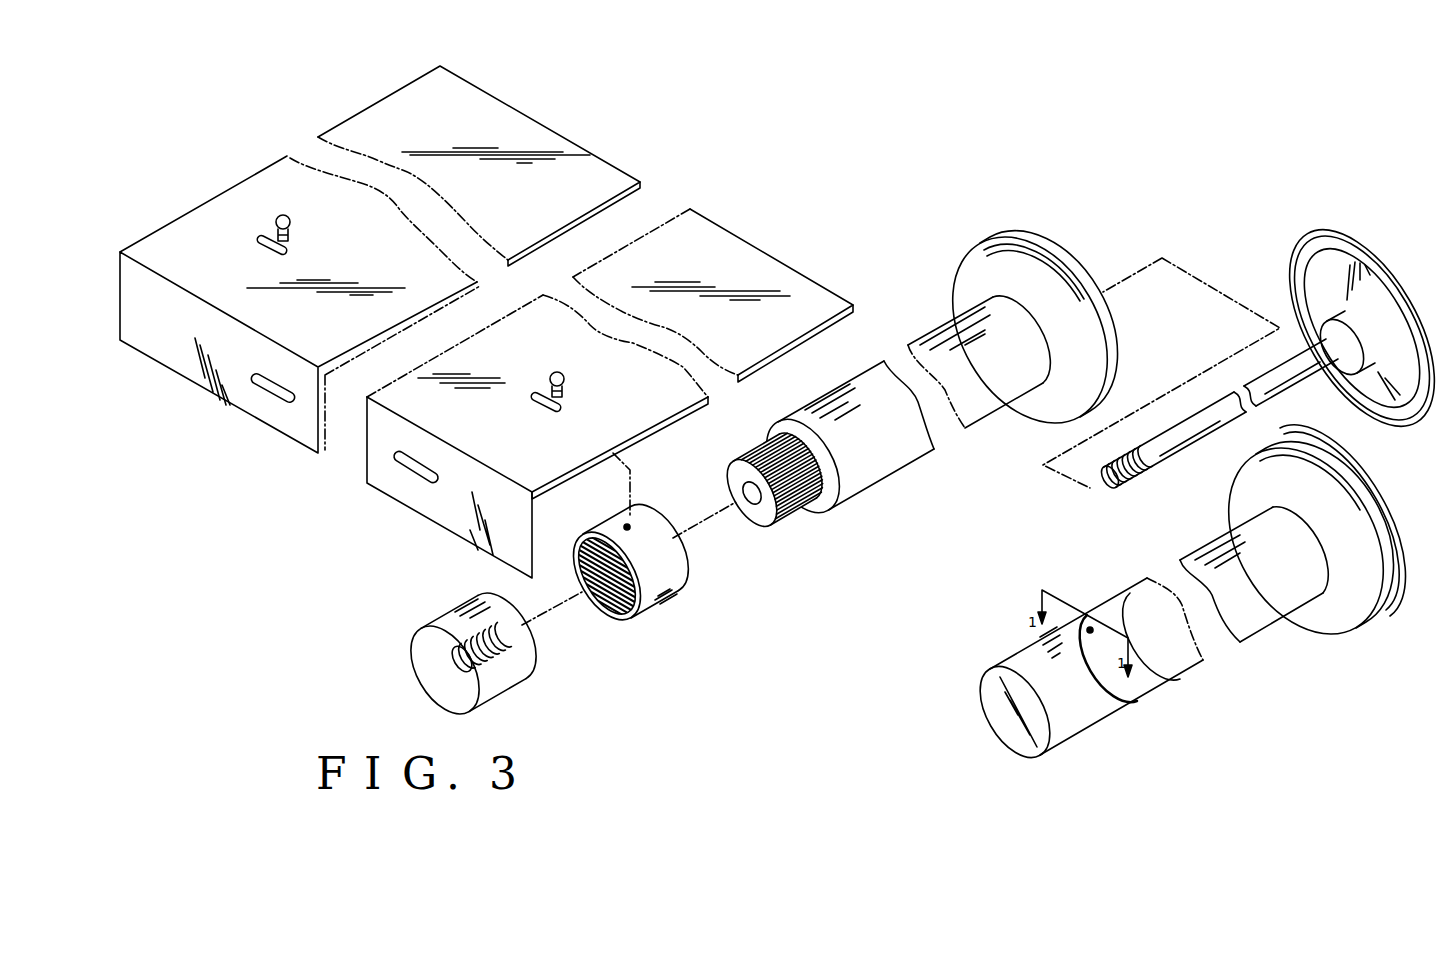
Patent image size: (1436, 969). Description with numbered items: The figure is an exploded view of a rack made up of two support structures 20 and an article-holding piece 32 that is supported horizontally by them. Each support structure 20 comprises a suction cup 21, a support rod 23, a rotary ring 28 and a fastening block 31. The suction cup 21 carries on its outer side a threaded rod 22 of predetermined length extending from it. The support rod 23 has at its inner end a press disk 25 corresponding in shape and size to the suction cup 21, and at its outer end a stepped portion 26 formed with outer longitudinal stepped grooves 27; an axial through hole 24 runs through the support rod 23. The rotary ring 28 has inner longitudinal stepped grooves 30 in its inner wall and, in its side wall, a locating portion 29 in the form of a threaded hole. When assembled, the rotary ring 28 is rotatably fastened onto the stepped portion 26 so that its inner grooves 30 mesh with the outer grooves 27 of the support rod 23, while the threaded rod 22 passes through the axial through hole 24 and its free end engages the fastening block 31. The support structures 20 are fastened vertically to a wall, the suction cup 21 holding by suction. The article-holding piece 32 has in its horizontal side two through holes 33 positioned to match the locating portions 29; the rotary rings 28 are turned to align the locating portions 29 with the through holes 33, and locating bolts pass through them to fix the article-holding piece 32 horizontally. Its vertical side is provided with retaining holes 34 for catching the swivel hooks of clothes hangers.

The support structure 20 is at (880, 563).
The suction cup 21 is at (1337, 280).
The threaded rod 22 is at (1190, 435).
The support rod 23 is at (880, 450).
The axial through hole 24 is at (755, 507).
The press disk 25 is at (1040, 280).
The stepped portion 26 is at (784, 520).
The outer longitudinal stepped grooves 27 is at (800, 512).
The rotary ring 28 is at (660, 593).
The locating portion 29 is at (629, 525).
The inner longitudinal stepped grooves 30 is at (617, 617).
The fastening block 31 is at (508, 677).
The article-holding piece 32 is at (725, 257).
The through hole 33 is at (540, 404).
The retaining hole 34 is at (415, 467).